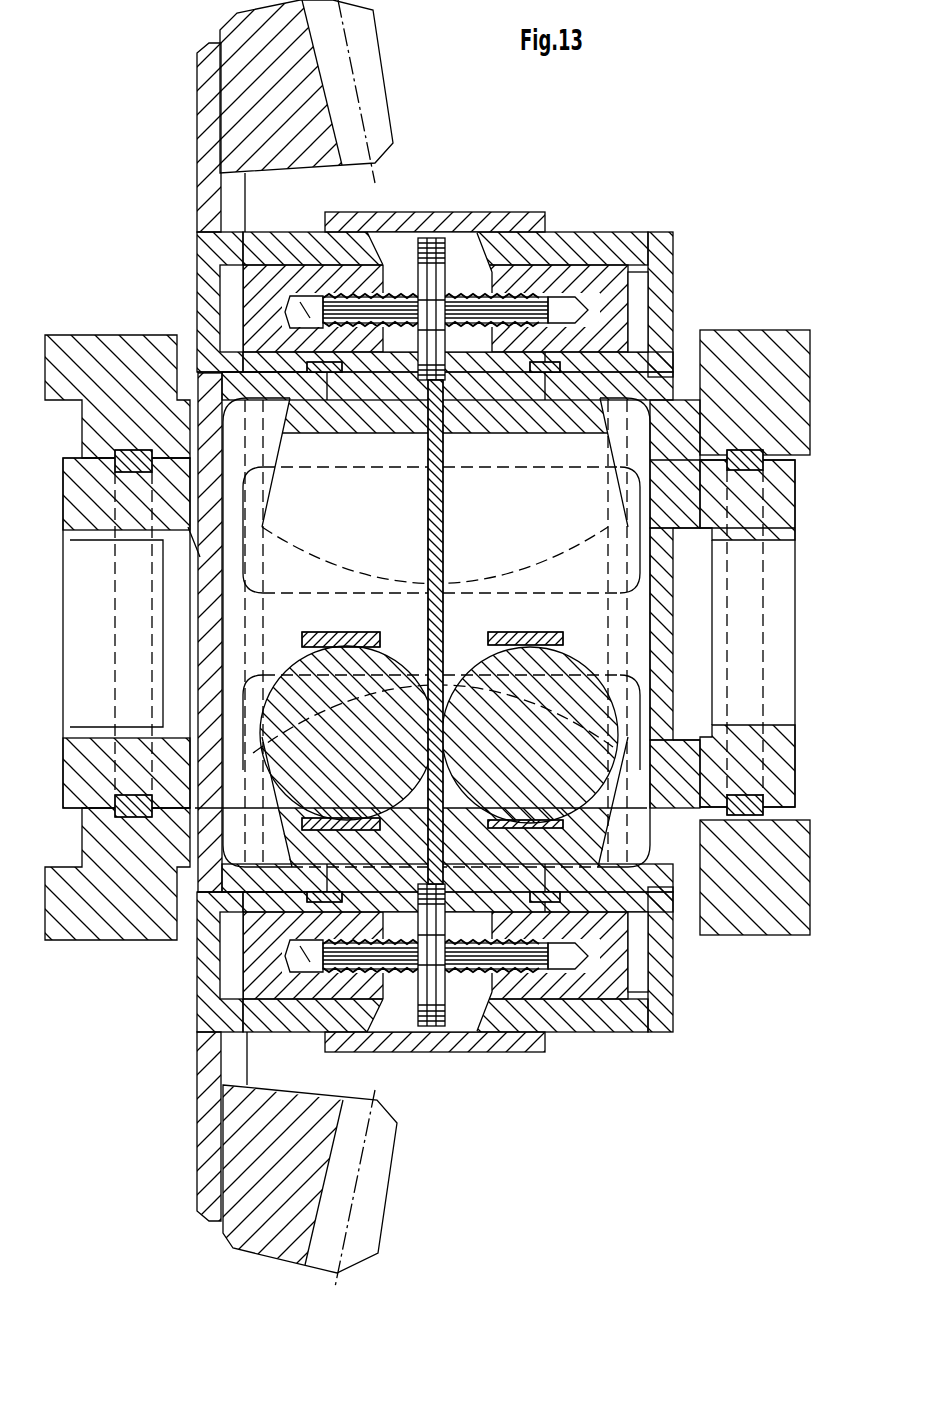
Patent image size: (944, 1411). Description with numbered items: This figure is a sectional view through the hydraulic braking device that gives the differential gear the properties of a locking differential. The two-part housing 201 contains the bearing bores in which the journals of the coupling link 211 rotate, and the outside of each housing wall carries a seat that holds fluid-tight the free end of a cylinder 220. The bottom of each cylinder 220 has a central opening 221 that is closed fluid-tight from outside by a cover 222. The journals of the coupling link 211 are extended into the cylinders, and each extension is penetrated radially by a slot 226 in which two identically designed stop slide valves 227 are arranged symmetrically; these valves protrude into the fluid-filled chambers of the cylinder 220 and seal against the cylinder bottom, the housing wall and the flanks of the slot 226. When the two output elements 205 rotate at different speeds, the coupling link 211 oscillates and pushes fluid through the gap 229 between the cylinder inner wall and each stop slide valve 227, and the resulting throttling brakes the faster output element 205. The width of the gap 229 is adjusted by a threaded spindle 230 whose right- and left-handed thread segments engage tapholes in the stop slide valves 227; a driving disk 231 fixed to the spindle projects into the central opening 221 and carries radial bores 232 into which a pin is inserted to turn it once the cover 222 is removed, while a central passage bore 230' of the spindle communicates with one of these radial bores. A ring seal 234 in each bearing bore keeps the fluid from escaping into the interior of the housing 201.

The housing 201 is at (640, 368).
The output element 205 is at (92, 490).
The coupling link 211 is at (637, 340).
The cylinder 220 is at (640, 262).
The central opening 221 is at (468, 280).
The cover 222 is at (492, 412).
The slot 226 is at (477, 265).
The stop slide valve 227 is at (255, 225).
The gap 229 is at (230, 305).
The threaded spindle 230 is at (430, 643).
The central passage bore 230' is at (746, 595).
The driving disk 231 is at (445, 1030).
The radial bore 232 is at (433, 240).
The ring seal 234 is at (330, 375).